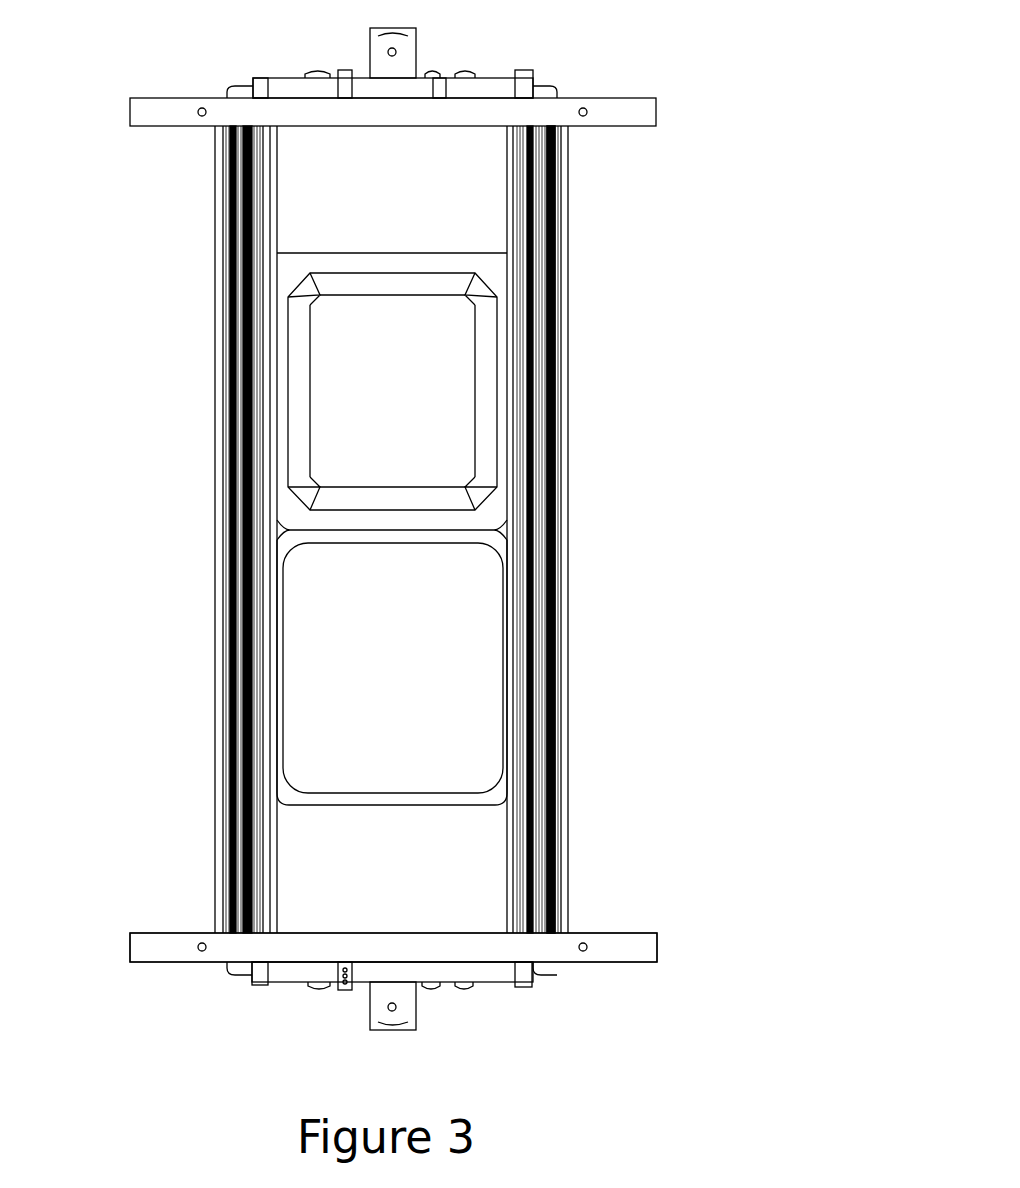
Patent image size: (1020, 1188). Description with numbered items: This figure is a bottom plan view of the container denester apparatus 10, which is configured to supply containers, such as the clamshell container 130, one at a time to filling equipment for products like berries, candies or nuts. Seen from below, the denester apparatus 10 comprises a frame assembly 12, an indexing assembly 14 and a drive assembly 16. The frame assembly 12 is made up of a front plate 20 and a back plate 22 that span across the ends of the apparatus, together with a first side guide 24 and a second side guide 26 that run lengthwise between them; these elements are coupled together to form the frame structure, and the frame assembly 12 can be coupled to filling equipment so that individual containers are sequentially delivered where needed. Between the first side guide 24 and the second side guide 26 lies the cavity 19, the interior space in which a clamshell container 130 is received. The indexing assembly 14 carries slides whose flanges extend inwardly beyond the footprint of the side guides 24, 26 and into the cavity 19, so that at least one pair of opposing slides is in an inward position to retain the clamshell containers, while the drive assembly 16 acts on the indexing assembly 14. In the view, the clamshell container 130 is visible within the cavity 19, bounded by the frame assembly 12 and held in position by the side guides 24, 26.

The container denester apparatus 10 is at (703, 705).
The frame assembly 12 is at (640, 925).
The indexing assembly 14 is at (540, 808).
The drive assembly 16 is at (468, 1016).
The cavity 19 is at (495, 222).
The front plate 20 is at (170, 933).
The back plate 22 is at (150, 128).
The first side guide 24 is at (567, 751).
The second side guide 26 is at (215, 799).
The clamshell container 130 is at (494, 623).